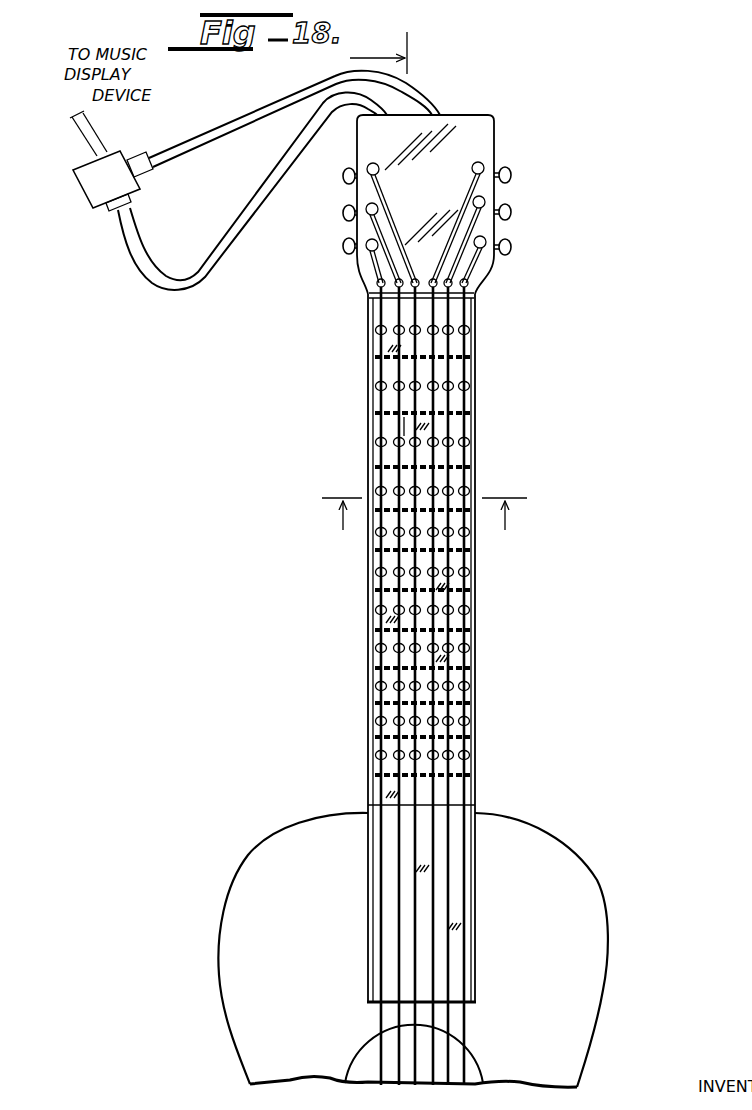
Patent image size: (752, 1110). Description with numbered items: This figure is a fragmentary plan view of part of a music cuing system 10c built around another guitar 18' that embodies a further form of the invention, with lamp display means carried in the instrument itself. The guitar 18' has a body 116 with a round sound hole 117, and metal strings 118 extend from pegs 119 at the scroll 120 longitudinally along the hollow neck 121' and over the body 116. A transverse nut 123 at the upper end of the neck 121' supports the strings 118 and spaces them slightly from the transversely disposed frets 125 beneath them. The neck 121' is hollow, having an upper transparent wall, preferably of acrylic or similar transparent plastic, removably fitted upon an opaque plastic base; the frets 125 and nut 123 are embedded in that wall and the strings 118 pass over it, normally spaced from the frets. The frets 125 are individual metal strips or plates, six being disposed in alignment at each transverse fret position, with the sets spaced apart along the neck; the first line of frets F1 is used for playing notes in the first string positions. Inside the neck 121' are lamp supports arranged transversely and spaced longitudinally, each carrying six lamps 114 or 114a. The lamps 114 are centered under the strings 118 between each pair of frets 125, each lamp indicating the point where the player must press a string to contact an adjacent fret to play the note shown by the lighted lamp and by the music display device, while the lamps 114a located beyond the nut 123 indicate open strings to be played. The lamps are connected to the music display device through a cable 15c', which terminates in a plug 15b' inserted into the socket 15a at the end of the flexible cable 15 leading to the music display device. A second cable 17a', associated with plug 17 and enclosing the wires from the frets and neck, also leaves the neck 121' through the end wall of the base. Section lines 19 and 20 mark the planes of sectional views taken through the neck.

The system 10c is at (300, 575).
The flexible cable 15 is at (92, 133).
The socket 15a is at (112, 187).
The plug 15b' is at (93, 229).
The cable 15c' is at (252, 210).
The plug 17 is at (285, 120).
The cable 17a' is at (292, 124).
The section line 19- 19 is at (402, 430).
The section line 20- 20 is at (424, 500).
The scroll 120 is at (473, 138).
The pegs 119 is at (482, 168).
The lamps 114 is at (458, 615).
The lamps 114a is at (472, 279).
The nut 123 is at (452, 305).
The hollow neck 121' is at (462, 648).
The first line of frets F1 is at (452, 364).
The frets 125 is at (452, 664).
The metal strings 118 is at (463, 750).
The guitar 18' is at (451, 950).
The body 116 is at (576, 1000).
The round sound hole 117 is at (485, 1066).